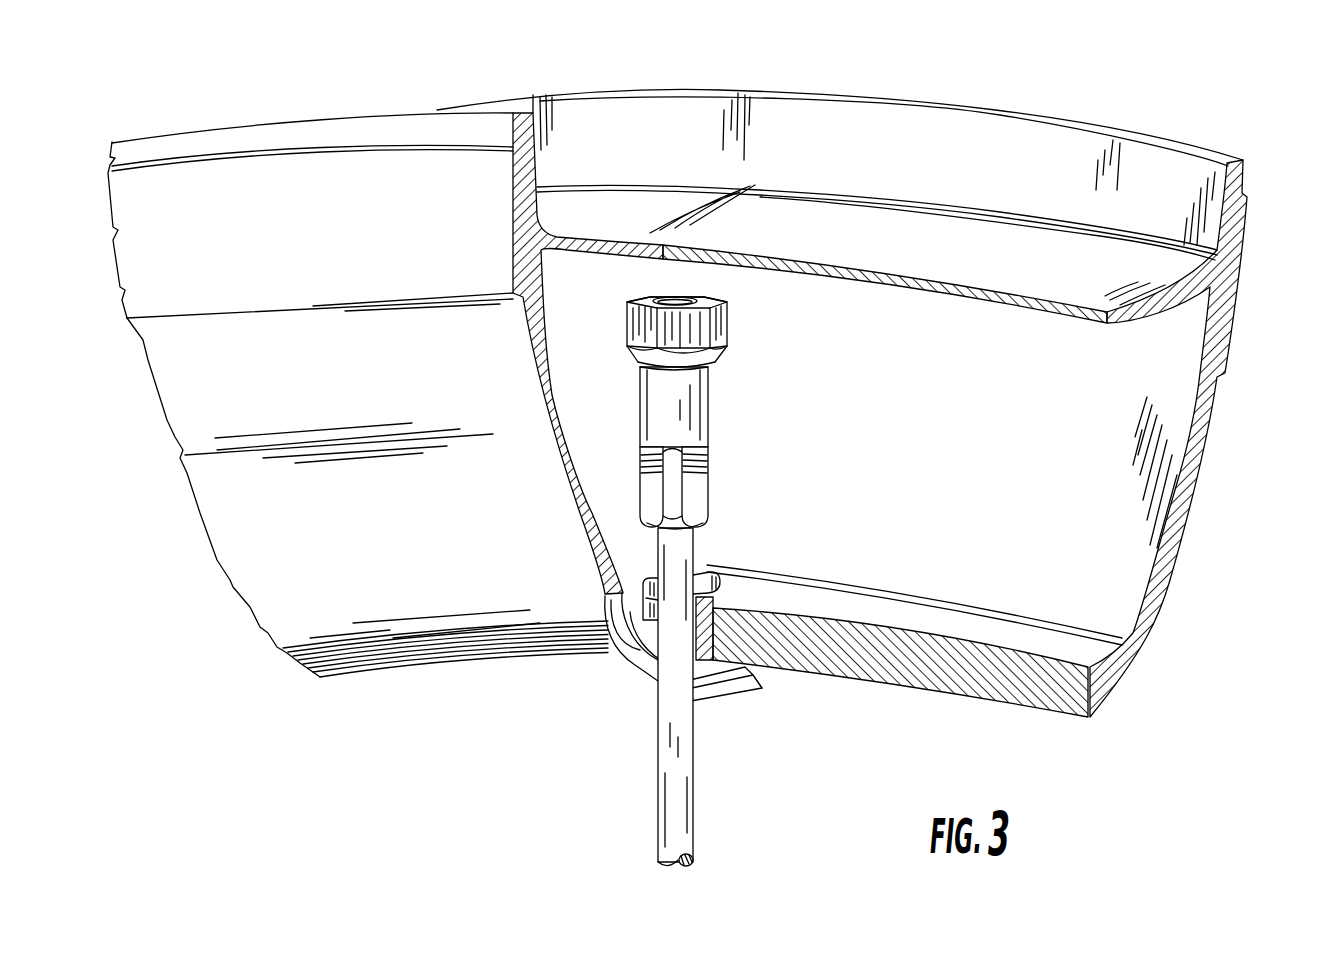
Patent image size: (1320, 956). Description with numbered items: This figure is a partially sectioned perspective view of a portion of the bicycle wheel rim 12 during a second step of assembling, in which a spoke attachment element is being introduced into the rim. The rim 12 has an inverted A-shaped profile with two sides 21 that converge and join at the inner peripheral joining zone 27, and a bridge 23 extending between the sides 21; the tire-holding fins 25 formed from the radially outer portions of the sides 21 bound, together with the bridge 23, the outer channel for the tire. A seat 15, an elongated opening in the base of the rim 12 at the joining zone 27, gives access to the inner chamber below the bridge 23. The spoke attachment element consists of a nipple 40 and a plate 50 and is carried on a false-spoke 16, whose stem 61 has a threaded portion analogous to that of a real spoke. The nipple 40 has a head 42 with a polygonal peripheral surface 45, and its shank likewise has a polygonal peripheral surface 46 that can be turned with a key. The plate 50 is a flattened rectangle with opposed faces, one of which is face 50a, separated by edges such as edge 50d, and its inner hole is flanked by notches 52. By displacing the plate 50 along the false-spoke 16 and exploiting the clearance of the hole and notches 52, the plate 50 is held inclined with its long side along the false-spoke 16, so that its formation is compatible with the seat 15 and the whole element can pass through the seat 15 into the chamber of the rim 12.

The rim 12 is at (1010, 110).
The seat 15 is at (617, 622).
The false-spoke 16 is at (707, 816).
The sides 21 is at (1180, 537).
The bridge 23 is at (640, 217).
The tire-holding fins 25 is at (537, 147).
The inner peripheral joining zone 27 is at (407, 653).
The nipple 40 is at (725, 402).
The head 42 is at (707, 300).
The polygonal peripheral surface 45 is at (720, 327).
The polygonal peripheral surface 46 is at (700, 487).
The plate 50 is at (747, 717).
The face 50a is at (673, 698).
The edge 50d is at (745, 692).
The notches 52 is at (653, 580).
The stem 61 is at (665, 795).